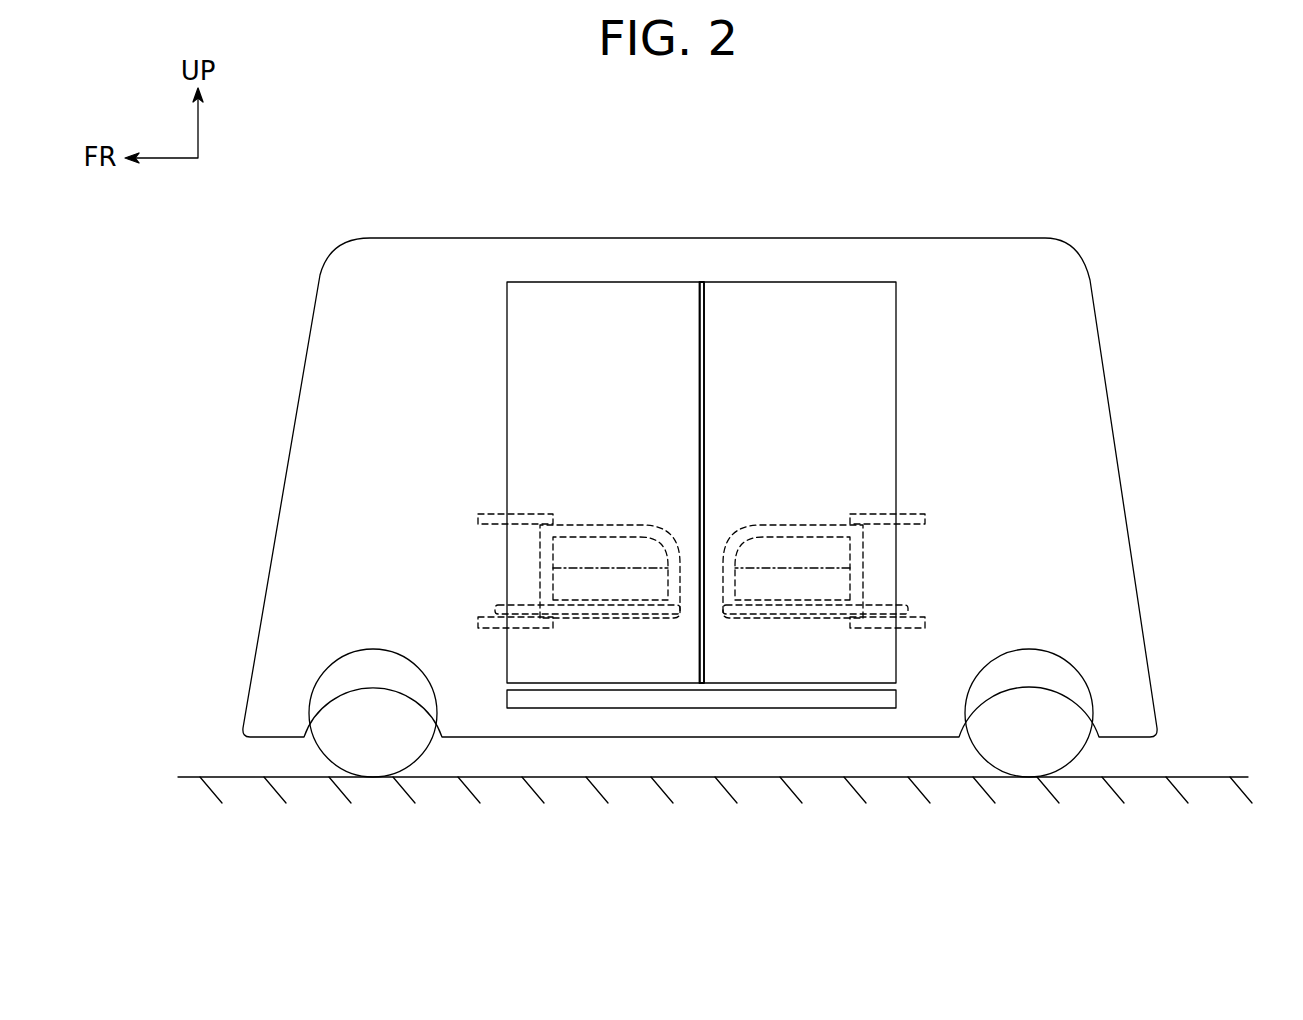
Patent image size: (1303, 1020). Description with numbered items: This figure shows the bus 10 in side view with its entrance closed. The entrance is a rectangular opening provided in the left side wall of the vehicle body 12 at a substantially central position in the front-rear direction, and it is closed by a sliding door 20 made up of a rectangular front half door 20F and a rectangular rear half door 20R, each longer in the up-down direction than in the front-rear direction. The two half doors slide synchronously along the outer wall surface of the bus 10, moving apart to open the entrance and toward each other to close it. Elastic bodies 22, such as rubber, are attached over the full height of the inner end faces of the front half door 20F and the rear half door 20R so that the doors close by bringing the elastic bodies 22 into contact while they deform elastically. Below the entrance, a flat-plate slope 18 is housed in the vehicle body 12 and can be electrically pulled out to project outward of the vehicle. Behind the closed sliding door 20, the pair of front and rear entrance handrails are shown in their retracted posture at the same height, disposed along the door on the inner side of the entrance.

The bus 10 is at (700, 494).
The vehicle body 12 is at (467, 237).
The slope 18 is at (575, 705).
The sliding door 20 is at (701, 530).
The front half door 20F is at (643, 650).
The rear half door 20R is at (763, 648).
The elastic body 22 is at (698, 330).